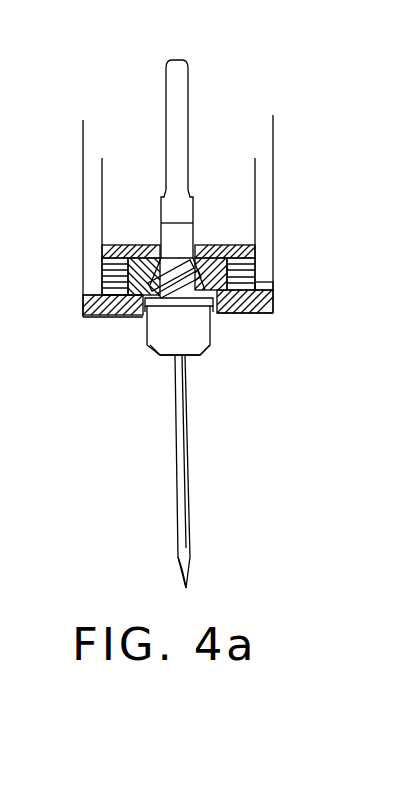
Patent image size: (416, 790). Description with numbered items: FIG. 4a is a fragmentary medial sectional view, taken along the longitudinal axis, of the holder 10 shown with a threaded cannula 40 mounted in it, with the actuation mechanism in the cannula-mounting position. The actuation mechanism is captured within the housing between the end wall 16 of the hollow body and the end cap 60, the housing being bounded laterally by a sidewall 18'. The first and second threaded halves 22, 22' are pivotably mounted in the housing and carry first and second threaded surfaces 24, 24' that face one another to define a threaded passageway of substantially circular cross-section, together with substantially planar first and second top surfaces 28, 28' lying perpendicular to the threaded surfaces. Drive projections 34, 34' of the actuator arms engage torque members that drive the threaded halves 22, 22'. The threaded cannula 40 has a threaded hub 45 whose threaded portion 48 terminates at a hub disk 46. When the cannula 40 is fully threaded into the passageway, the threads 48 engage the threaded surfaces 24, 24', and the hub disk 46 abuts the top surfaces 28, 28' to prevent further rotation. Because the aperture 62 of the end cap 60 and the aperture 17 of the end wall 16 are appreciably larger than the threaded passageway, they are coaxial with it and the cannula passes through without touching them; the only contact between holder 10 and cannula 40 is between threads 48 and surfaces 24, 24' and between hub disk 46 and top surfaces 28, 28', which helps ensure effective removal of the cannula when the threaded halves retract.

The holder 10 is at (285, 115).
The end wall 16 is at (112, 247).
The aperture 17 is at (148, 245).
The drive projection 34 is at (94, 247).
The drive projection 34' is at (269, 247).
The first threaded half 22 is at (80, 276).
The second threaded half 22' is at (285, 241).
The first threaded surface 24 is at (94, 282).
The second threaded surface 24' is at (264, 220).
The sidewall 18' is at (299, 278).
The first top surface 28 is at (113, 337).
The second top surface 28' is at (282, 303).
The threaded portion 48 is at (100, 313).
The end cap 60 is at (120, 305).
The hub disk 46 is at (152, 318).
The aperture 62 is at (215, 318).
The threaded hub 45 is at (222, 345).
The threaded cannula 40 is at (203, 443).